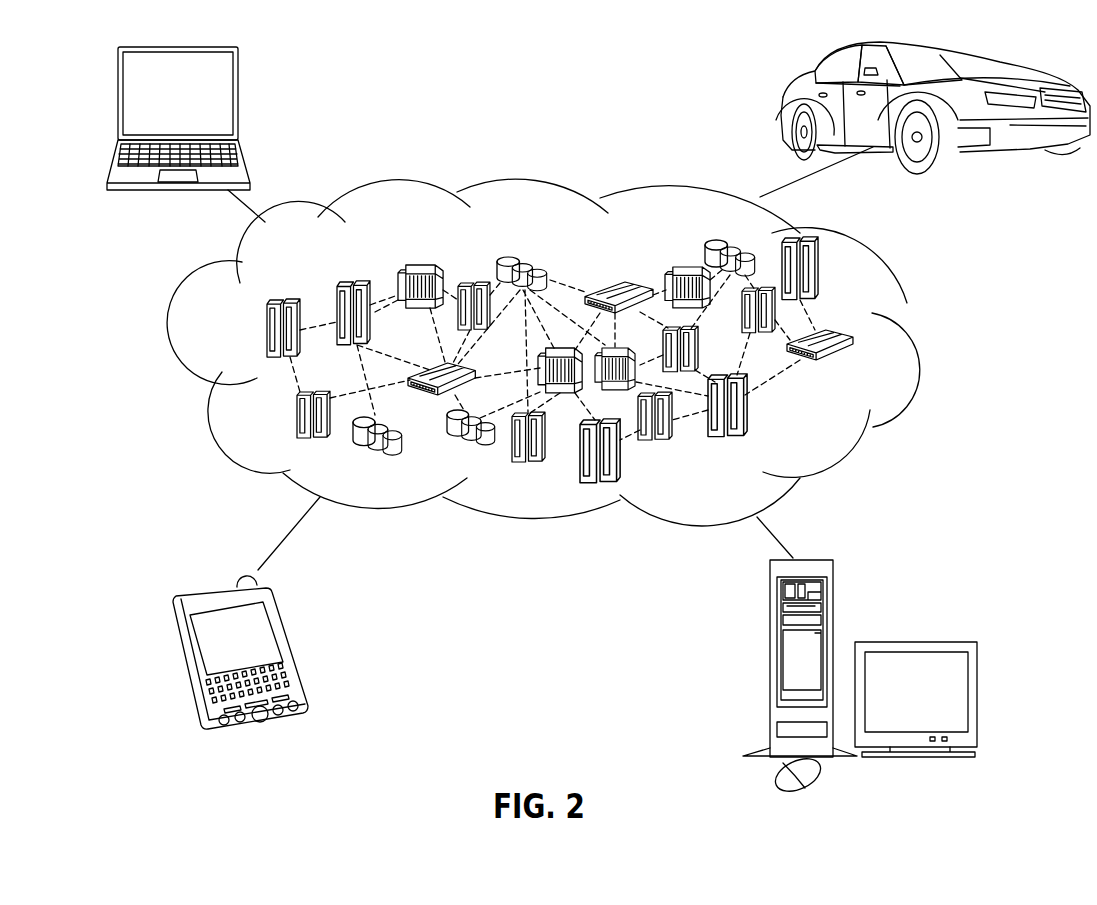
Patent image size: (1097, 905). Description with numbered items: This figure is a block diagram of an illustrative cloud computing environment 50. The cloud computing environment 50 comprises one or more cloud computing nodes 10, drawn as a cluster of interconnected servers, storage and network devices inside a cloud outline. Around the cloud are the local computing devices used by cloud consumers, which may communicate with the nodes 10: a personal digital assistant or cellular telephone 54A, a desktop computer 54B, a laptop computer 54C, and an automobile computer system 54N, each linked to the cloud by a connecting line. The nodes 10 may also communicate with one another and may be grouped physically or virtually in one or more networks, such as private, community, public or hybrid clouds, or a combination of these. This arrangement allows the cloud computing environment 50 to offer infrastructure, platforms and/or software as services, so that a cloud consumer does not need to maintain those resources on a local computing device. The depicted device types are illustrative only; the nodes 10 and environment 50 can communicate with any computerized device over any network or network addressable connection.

The cloud computing node 10 is at (833, 430).
The cloud computing environment 50 is at (918, 348).
The personal digital assistant or cellular telephone 54A is at (287, 622).
The desktop computer 54B is at (770, 612).
The laptop computer 54C is at (238, 80).
The automobile computer system 54N is at (784, 98).